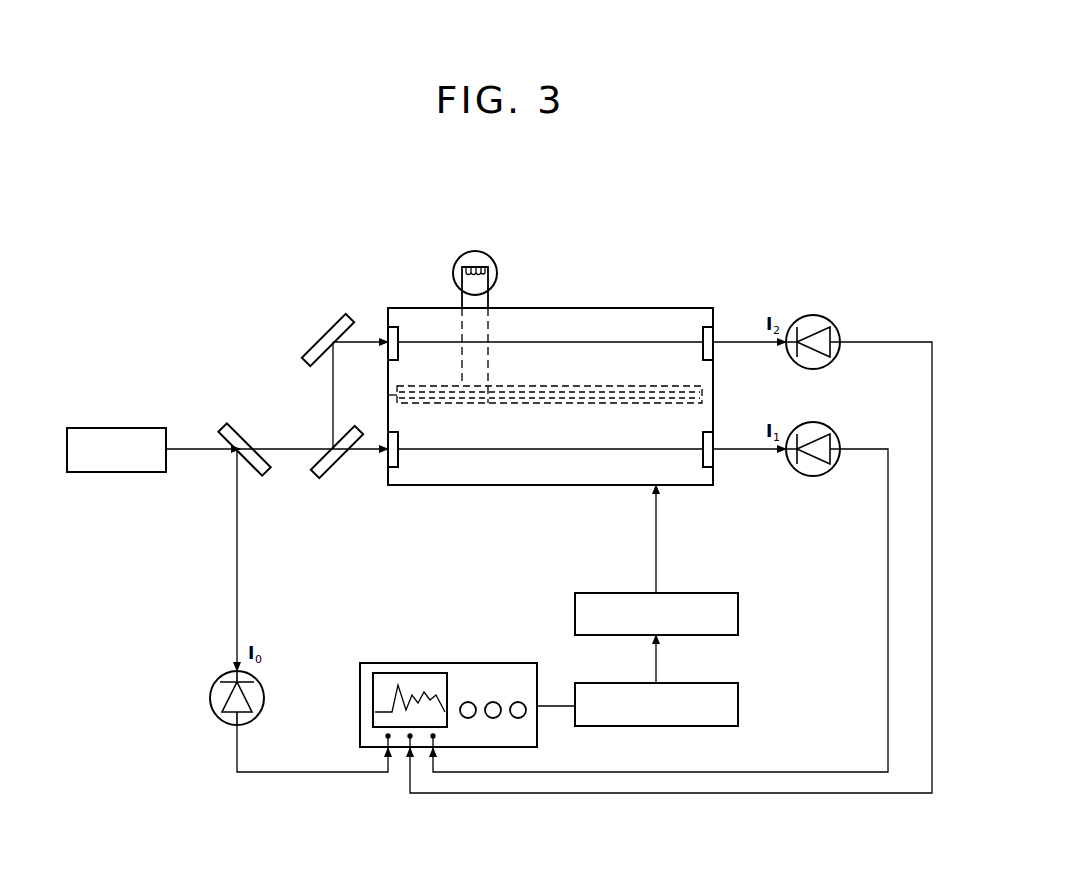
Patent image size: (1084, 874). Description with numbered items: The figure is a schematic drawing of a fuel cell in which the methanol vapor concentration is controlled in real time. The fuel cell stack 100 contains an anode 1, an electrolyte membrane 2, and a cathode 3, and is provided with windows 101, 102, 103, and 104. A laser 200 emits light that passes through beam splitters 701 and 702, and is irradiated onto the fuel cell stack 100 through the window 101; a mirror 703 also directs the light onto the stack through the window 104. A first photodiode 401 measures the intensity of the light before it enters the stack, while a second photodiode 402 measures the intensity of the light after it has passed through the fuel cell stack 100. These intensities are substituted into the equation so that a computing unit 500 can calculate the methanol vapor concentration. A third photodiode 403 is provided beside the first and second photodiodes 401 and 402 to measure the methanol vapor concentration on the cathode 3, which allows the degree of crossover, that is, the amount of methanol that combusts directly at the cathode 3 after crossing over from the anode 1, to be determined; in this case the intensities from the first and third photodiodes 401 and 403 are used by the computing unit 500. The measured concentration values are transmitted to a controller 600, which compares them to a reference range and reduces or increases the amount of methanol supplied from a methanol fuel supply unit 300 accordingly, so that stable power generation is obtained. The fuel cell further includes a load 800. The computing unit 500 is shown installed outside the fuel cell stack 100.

The anode 1 is at (614, 403).
The electrolyte membrane 2 is at (576, 398).
The cathode 3 is at (531, 393).
The fuel cell stack 100 is at (636, 300).
The window 101 is at (388, 463).
The window 102 is at (713, 460).
The window 103 is at (713, 352).
The window 104 is at (388, 327).
The laser 200 is at (117, 428).
The methanol fuel supply unit 300 is at (738, 615).
The first photodiode 401 is at (210, 698).
The second photodiode 402 is at (813, 477).
The third photodiode 403 is at (813, 314).
The computing unit 500 is at (437, 663).
The controller 600 is at (738, 706).
The beam splitter 701 is at (219, 420).
The beam splitter 702 is at (313, 480).
The mirror 703 is at (337, 323).
The load 800 is at (475, 251).